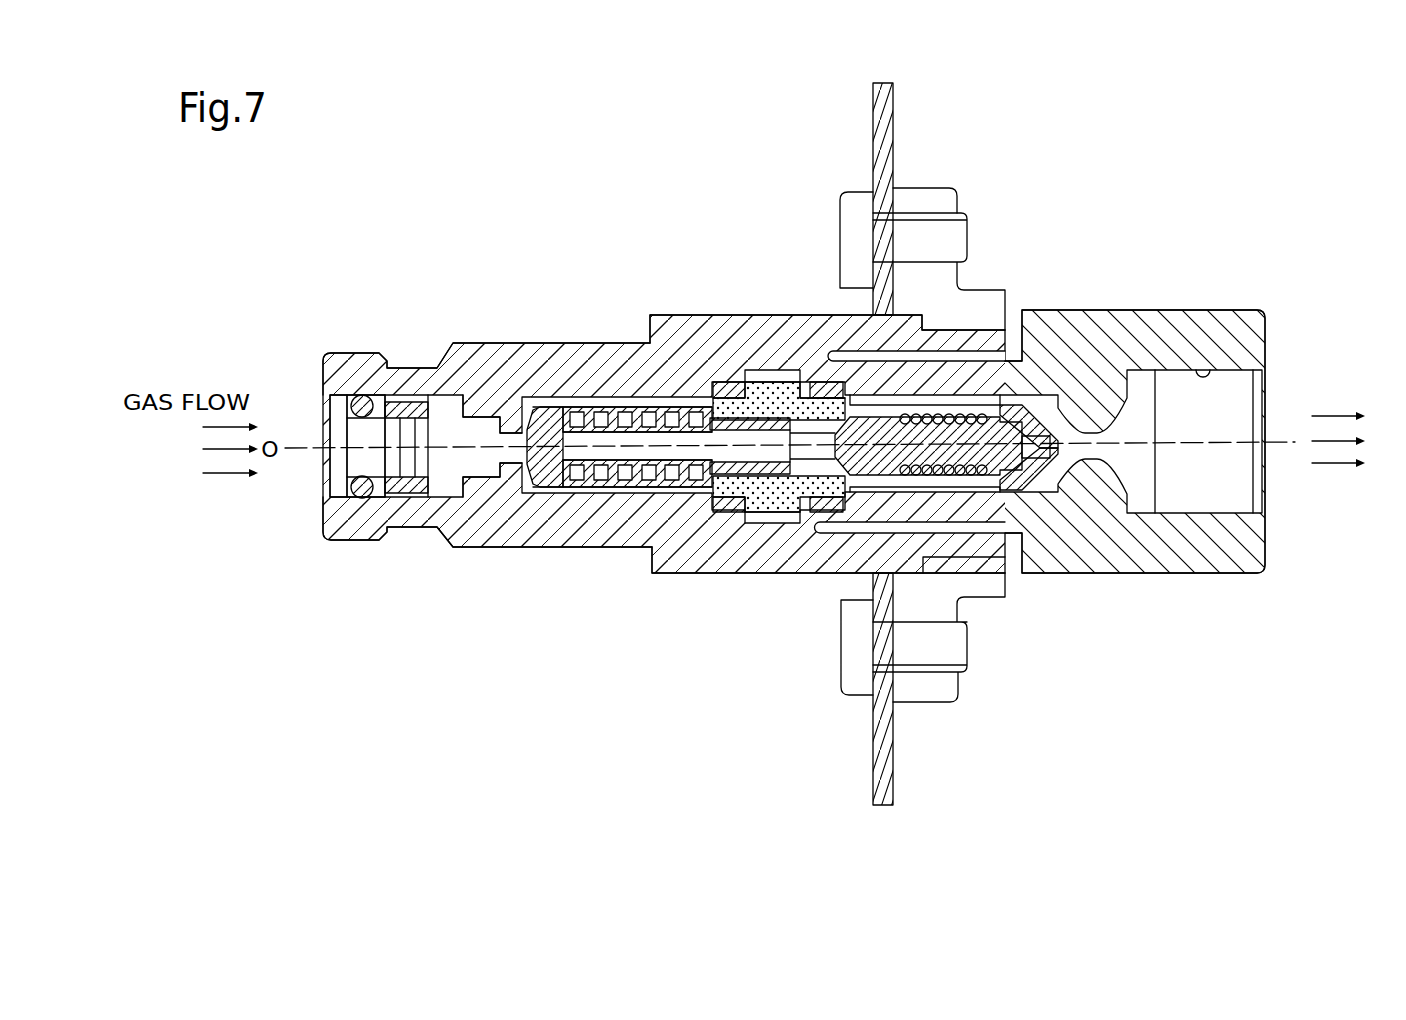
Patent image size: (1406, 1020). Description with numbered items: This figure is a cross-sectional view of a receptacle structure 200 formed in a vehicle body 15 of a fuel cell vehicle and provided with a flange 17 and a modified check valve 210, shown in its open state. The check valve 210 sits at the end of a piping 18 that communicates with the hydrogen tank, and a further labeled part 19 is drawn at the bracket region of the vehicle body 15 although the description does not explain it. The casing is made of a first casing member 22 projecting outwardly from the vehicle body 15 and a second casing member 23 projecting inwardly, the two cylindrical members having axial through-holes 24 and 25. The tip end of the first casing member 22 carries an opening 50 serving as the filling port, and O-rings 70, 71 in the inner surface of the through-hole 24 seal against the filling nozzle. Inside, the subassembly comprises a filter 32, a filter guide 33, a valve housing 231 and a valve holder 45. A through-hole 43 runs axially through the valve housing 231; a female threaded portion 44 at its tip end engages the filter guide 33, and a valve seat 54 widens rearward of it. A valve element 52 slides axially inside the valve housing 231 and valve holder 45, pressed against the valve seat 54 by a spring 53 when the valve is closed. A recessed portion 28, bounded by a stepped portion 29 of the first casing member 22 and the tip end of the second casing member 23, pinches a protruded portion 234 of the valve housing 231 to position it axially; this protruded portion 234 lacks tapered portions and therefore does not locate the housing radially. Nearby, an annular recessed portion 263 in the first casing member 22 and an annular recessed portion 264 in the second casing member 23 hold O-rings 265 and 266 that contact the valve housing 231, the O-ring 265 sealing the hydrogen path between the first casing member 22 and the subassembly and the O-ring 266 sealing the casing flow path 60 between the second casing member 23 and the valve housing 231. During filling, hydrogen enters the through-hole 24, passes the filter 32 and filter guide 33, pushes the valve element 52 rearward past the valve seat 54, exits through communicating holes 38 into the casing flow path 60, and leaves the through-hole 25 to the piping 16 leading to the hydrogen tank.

The vehicle body 15 is at (873, 112).
The piping 16 is at (1354, 439).
The flange 17 is at (938, 690).
The piping 18 is at (930, 210).
The bracket tab 19 is at (963, 230).
The first casing member 22 is at (482, 548).
The second casing member 23 is at (1205, 575).
The through-hole 24 is at (486, 432).
The through-hole 25 is at (1203, 372).
The recessed portion 28 is at (770, 382).
The stepped portion 29 is at (745, 392).
The filter 32 is at (600, 406).
The filter guide 33 is at (536, 492).
The communicating holes 38 is at (848, 562).
The through-hole 43 is at (797, 502).
The female threaded portion 44 is at (700, 425).
The valve holder 45 is at (1042, 404).
The opening 50 is at (330, 398).
The valve element 52 is at (1030, 402).
The spring 53 is at (936, 482).
The valve seat 54 is at (850, 412).
The casing flow path 60 is at (988, 470).
The O-ring 70 is at (362, 395).
The O-ring 71 is at (400, 400).
The receptacle structure 200 is at (1184, 157).
The check valve 210 is at (621, 578).
The valve housing 231 is at (762, 523).
The protruded portion 234 is at (786, 396).
The recessed portion 263 is at (725, 384).
The recessed portion 264 is at (822, 384).
The O-ring 265 is at (724, 512).
The O-ring 266 is at (825, 512).